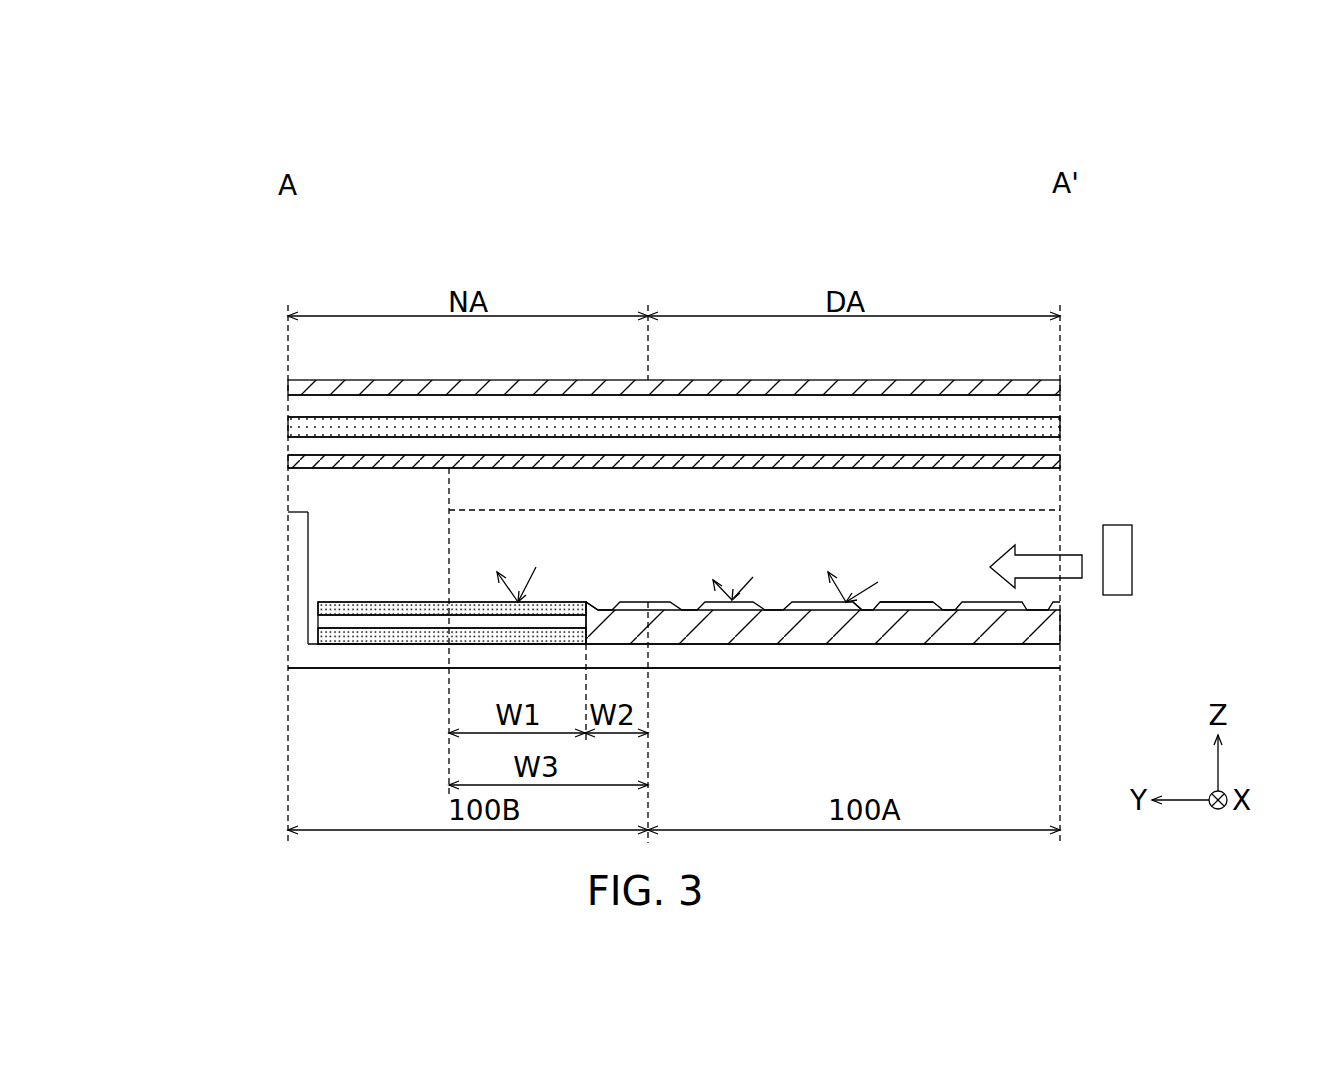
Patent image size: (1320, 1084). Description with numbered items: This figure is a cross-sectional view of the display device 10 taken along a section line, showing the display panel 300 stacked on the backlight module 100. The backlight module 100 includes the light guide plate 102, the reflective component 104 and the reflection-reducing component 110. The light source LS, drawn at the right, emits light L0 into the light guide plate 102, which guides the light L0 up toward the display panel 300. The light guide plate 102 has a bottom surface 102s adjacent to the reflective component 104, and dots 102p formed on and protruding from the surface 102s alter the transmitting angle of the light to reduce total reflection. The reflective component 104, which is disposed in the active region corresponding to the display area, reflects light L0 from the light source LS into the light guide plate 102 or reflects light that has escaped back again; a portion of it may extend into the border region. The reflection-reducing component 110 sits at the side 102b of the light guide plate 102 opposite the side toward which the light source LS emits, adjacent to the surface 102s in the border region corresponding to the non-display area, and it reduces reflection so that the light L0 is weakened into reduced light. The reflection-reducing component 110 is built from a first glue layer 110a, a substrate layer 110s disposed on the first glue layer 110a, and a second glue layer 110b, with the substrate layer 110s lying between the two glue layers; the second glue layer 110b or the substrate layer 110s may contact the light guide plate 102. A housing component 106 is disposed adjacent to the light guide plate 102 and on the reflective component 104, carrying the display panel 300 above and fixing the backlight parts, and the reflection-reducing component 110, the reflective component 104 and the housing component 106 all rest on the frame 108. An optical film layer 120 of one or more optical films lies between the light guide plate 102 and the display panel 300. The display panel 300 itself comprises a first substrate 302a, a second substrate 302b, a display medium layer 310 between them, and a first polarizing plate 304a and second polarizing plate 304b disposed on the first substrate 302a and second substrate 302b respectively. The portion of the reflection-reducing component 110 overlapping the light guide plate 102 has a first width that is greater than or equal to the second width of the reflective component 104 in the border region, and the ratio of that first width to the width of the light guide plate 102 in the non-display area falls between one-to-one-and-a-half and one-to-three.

The display device 10 is at (265, 250).
The backlight module 100 is at (1217, 93).
The light guide plate 102 is at (1055, 594).
The side of the light guide plate 102b is at (449, 523).
The dots 102p is at (957, 605).
The surface 102s is at (828, 613).
The reflective component 104 is at (690, 637).
The housing component 106 is at (300, 493).
The frame 108 is at (300, 654).
The reflection-reducing component 110 is at (1217, 328).
The first glue layer 110a is at (330, 643).
The second glue layer 110b is at (328, 608).
The substrate layer 110s is at (332, 622).
The optical film layer 120 is at (1055, 487).
The display panel 300 is at (189, 333).
The first substrate 302a is at (295, 447).
The second substrate 302b is at (290, 398).
The first polarizing plate 304a is at (292, 465).
The second polarizing plate 304b is at (290, 386).
The display medium layer 310 is at (290, 420).
The light source LS is at (1122, 565).
The light L0 is at (1060, 556).